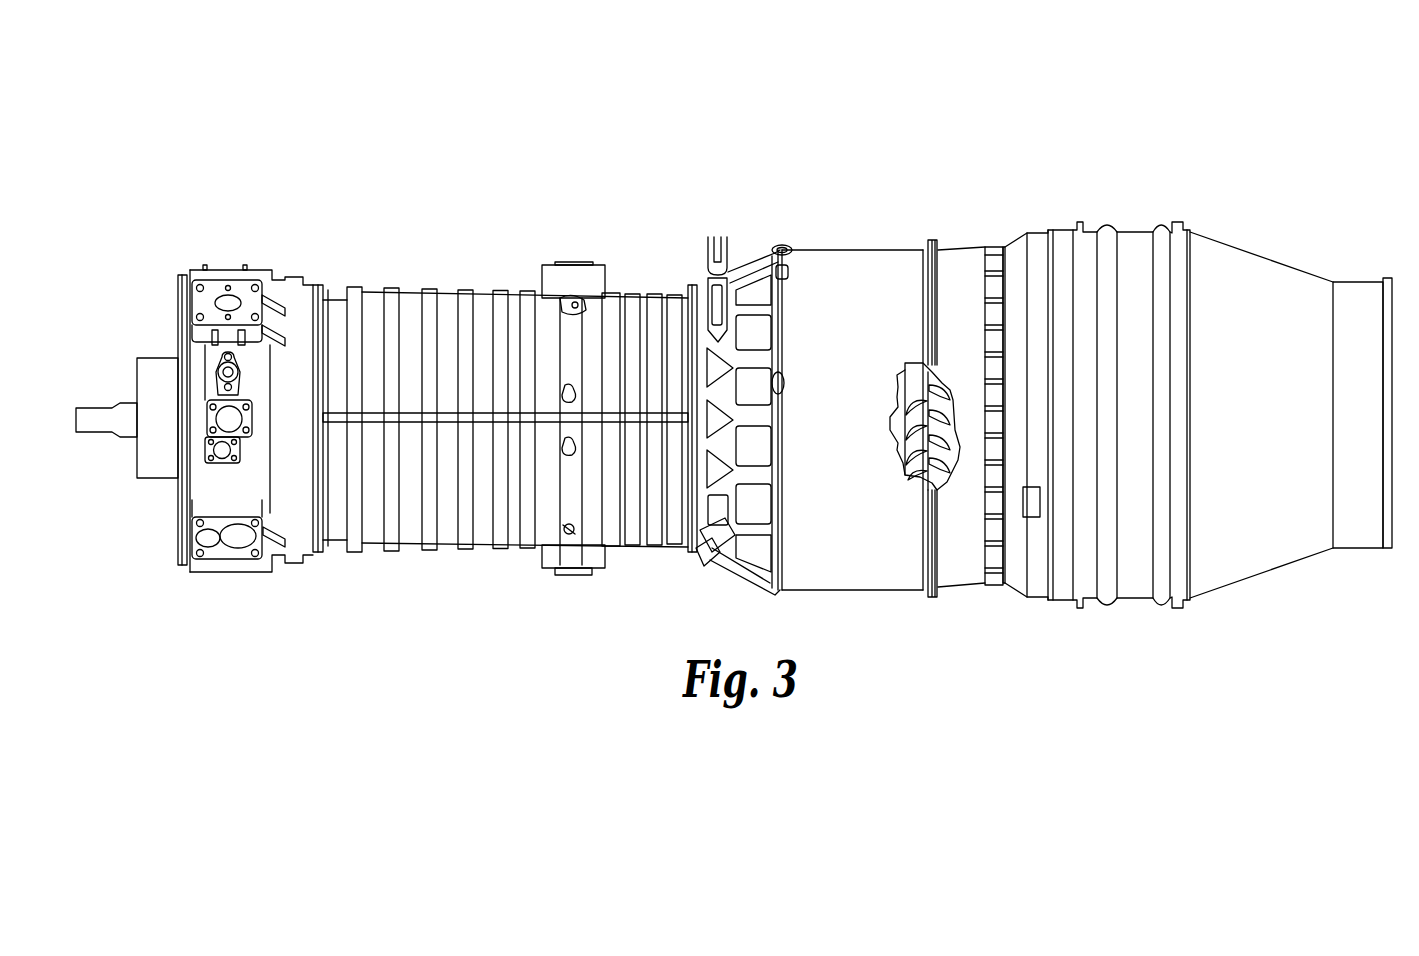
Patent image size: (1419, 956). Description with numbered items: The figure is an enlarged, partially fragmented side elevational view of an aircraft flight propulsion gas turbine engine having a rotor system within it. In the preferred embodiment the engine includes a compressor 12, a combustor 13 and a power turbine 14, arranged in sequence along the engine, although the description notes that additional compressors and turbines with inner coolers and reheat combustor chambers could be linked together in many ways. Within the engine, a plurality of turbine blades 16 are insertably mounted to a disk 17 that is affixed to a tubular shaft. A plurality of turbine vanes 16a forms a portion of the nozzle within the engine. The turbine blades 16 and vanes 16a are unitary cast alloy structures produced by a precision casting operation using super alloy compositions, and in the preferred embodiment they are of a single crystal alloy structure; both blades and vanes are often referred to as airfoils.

The compressor 12 is at (410, 547).
The combustor 13 is at (860, 250).
The power turbine 14 is at (1138, 227).
The turbine blades 16 is at (945, 385).
The turbine vanes 16a is at (903, 477).
The disk 17 is at (938, 478).